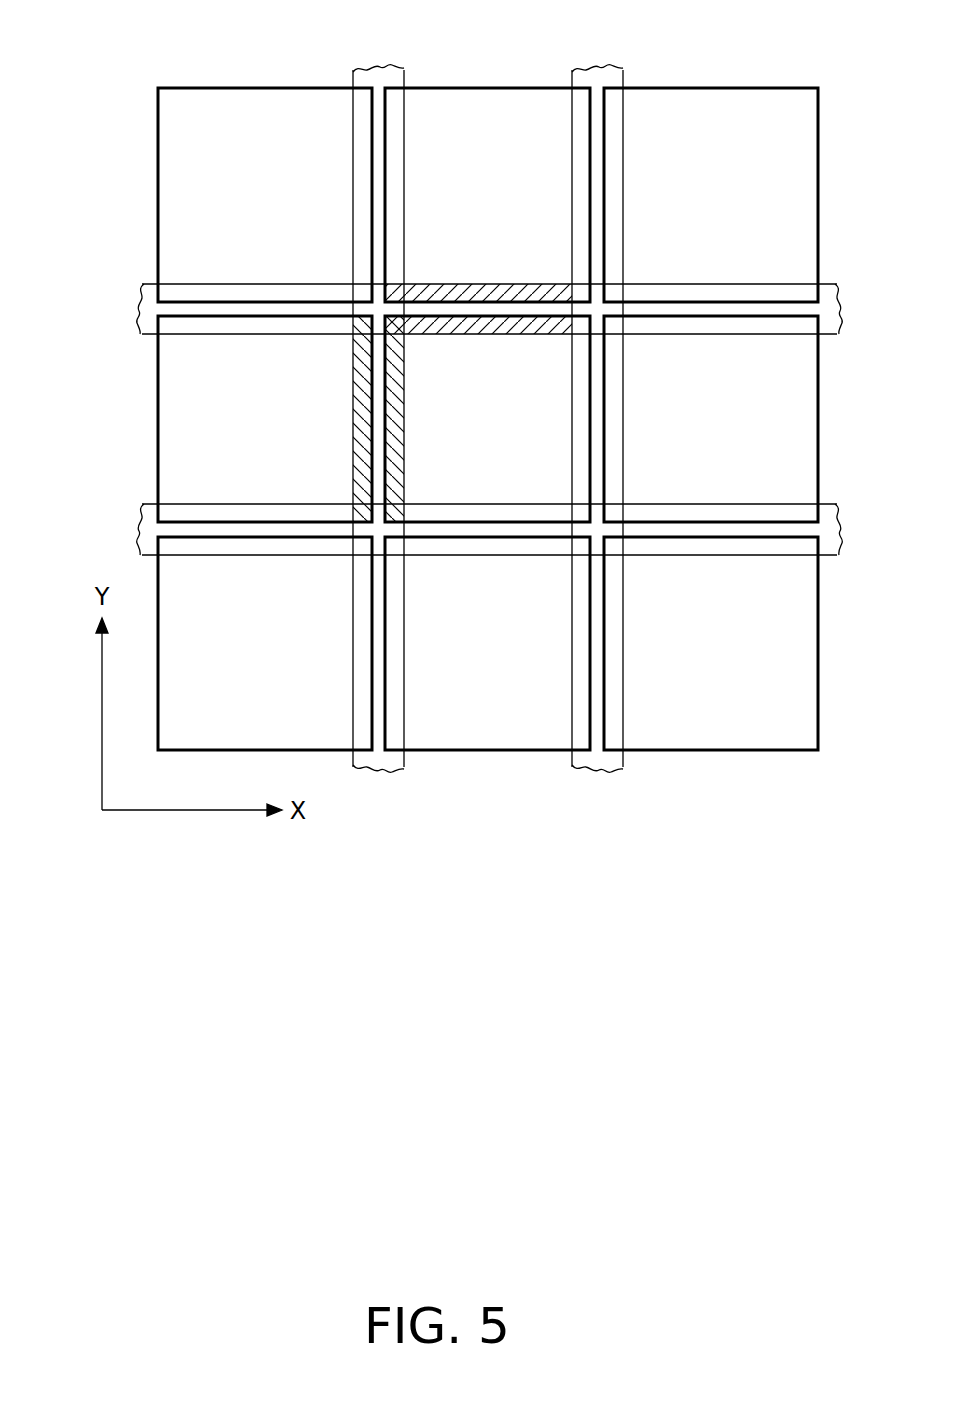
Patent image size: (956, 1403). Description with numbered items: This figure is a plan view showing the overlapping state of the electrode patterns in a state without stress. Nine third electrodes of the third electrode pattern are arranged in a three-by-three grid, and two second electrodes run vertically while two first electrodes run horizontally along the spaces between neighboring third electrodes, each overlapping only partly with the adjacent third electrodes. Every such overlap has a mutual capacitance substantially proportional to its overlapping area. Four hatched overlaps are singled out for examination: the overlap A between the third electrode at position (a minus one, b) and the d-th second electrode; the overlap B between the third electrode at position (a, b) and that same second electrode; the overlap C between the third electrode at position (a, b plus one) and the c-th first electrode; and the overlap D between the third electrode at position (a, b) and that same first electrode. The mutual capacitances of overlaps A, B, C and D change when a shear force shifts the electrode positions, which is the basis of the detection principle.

The overlap A is at (353, 378).
The overlap B is at (404, 388).
The overlap C is at (480, 288).
The overlap D is at (507, 331).